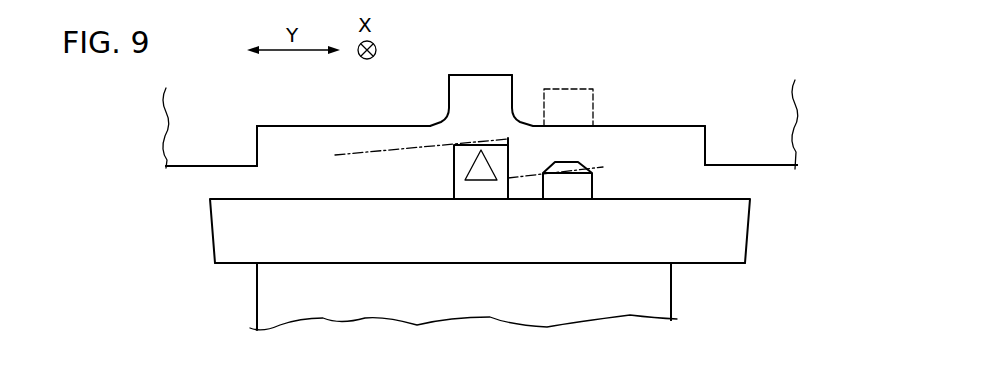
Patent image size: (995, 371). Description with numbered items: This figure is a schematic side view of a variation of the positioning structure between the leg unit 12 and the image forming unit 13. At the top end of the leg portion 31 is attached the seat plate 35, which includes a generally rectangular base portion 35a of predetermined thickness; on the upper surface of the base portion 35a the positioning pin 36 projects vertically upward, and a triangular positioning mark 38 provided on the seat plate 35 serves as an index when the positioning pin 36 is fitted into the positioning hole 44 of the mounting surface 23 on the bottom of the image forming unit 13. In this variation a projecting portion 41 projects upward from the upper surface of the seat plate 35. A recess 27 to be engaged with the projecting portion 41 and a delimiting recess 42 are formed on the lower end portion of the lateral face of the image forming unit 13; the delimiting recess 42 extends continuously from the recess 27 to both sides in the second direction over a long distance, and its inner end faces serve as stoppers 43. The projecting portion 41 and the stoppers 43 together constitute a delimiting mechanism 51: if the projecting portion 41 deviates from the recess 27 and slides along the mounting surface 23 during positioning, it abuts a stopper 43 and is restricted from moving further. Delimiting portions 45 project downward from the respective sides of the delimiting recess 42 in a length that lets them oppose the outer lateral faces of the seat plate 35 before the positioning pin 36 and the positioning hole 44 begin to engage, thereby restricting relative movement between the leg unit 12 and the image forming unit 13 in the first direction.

The leg unit 12 is at (672, 300).
The image forming unit 13 is at (785, 167).
The mounting surface 23 is at (404, 153).
The recess 27 is at (456, 97).
The leg portion 31 is at (257, 298).
The seat plate 35 is at (748, 242).
The base portion 35a is at (324, 264).
The positioning pin 36 is at (593, 183).
The positioning mark 38 is at (482, 167).
The projecting portion 41 is at (453, 184).
The delimiting recess 42 is at (327, 126).
The stopper 43 is at (258, 153).
The positioning hole 44 is at (586, 108).
The delimiting portion 45 is at (183, 157).
The delimiting mechanism 51 is at (713, 133).